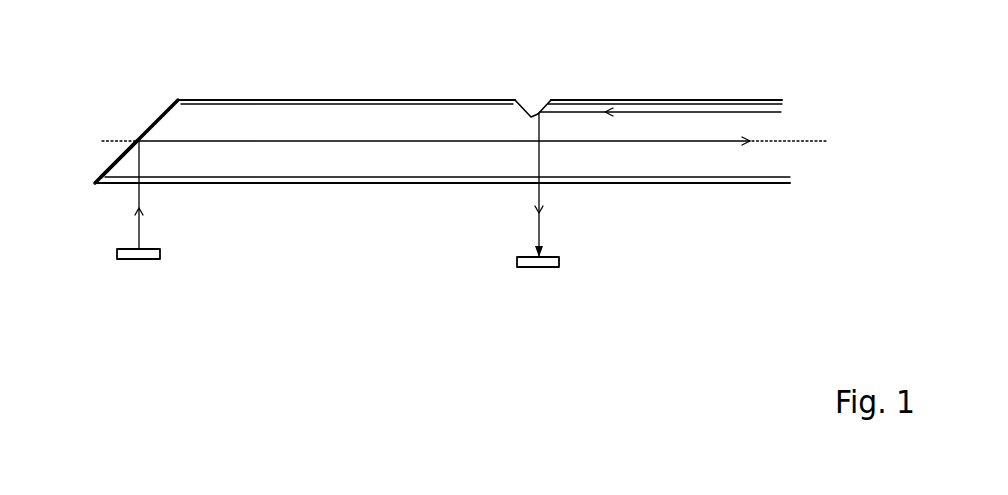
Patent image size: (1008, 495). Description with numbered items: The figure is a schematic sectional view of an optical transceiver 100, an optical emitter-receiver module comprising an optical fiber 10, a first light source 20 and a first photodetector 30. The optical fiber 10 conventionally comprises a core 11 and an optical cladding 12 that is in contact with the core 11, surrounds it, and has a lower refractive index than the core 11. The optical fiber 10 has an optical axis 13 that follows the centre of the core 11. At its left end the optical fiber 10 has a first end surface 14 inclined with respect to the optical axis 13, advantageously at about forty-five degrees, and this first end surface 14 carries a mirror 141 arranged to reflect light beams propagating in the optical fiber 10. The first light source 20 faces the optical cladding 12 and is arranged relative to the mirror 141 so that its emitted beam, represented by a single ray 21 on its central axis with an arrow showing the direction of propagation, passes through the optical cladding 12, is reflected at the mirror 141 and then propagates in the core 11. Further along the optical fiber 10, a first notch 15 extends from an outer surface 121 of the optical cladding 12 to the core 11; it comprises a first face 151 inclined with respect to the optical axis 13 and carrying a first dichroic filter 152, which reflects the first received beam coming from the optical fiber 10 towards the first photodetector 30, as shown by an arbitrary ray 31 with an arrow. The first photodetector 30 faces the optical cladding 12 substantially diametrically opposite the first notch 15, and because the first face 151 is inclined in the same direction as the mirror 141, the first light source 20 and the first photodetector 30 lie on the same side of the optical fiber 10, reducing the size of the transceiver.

The optical transceiver 100 is at (78, 66).
The optical fiber 10 is at (332, 95).
The core 11 is at (725, 170).
The optical cladding 12 is at (230, 100).
The outer surface 121 is at (745, 100).
The optical axis 13 is at (800, 143).
The first end surface 14 is at (167, 116).
The mirror 141 is at (105, 172).
The first notch 15 is at (533, 95).
The first face 151 is at (528, 112).
The first dichroic filter 152 is at (541, 111).
The first light source 20 is at (148, 262).
The ray 21 is at (140, 231).
The first photodetector 30 is at (545, 270).
The ray 31 is at (539, 229).